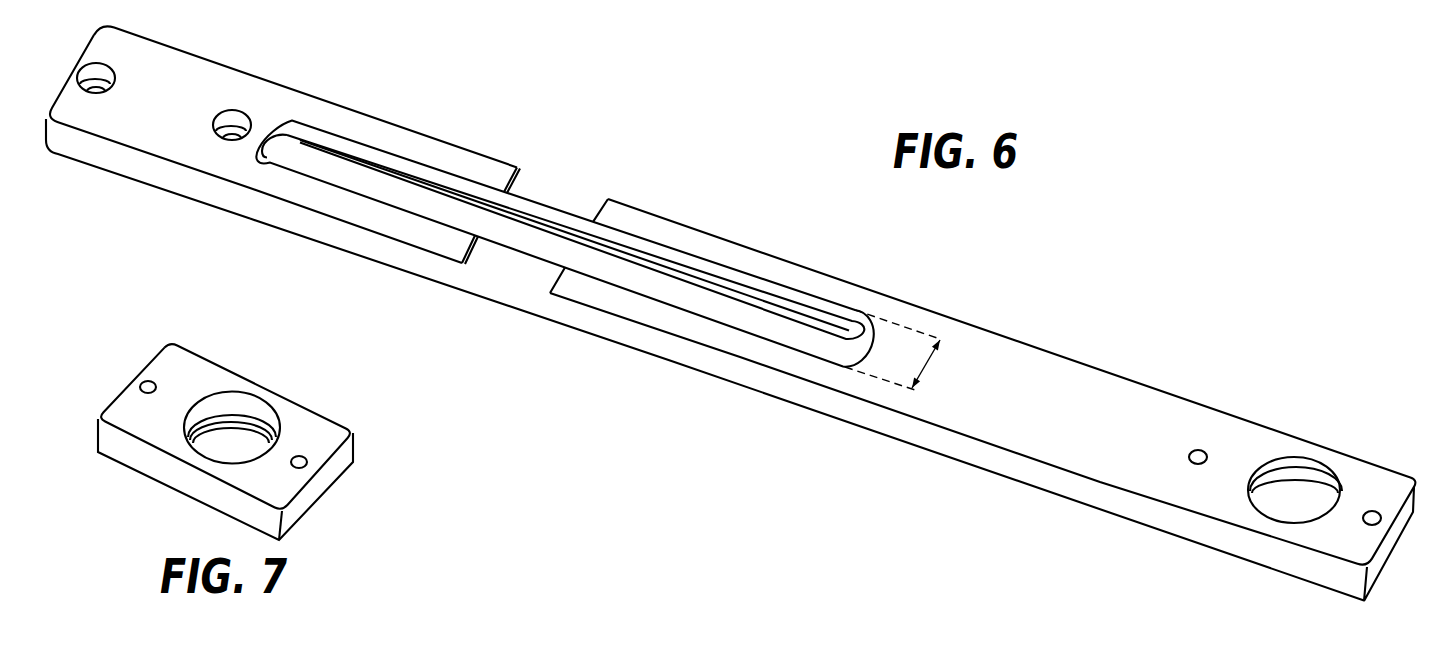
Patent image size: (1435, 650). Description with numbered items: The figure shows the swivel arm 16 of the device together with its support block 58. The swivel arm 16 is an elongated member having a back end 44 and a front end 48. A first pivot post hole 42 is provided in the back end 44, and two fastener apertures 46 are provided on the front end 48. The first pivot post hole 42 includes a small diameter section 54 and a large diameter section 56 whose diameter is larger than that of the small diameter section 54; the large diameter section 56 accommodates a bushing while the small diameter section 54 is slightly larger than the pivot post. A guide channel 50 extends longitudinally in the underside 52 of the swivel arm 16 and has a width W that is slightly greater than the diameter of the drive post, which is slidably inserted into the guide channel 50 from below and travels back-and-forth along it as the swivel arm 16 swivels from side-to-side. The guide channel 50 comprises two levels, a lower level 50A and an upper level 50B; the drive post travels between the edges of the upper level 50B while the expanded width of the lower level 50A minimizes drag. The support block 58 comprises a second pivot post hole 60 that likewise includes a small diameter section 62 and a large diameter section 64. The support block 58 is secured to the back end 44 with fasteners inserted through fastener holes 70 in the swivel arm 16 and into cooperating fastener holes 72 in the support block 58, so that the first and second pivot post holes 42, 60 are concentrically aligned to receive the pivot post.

In FIG. 6, the swivel arm 16 is at (1042, 348).
In FIG. 6, the first pivot post hole 42 is at (1297, 487).
In FIG. 6, the back end 44 is at (1110, 517).
In FIG. 6, the fastener apertures 46 is at (107, 74).
In FIG. 6, the front end 48 is at (77, 181).
In FIG. 6, the guide channel 50 is at (782, 336).
In FIG. 6, the lower level 50A is at (442, 175).
In FIG. 6, the upper level 50B is at (362, 170).
In FIG. 6, the underside 52 is at (1037, 405).
In FIG. 6, the small diameter section 54 is at (1272, 476).
In FIG. 6, the large diameter section 56 is at (1291, 478).
In FIG. 7, the support block 58 is at (354, 442).
In FIG. 7, the second pivot post hole 60 is at (251, 444).
In FIG. 7, the small diameter section 62 is at (253, 422).
In FIG. 7, the large diameter section 64 is at (218, 403).
In FIG. 6, the fastener holes 70 is at (1200, 450).
In FIG. 7, the fastener holes 72 is at (150, 383).
In FIG. 6, the width W is at (927, 362).